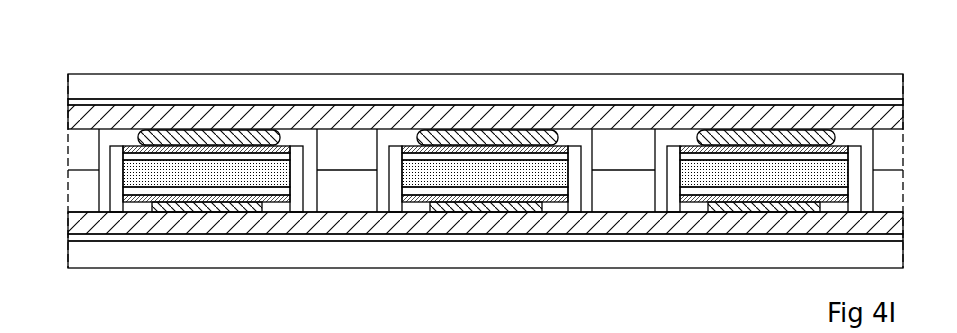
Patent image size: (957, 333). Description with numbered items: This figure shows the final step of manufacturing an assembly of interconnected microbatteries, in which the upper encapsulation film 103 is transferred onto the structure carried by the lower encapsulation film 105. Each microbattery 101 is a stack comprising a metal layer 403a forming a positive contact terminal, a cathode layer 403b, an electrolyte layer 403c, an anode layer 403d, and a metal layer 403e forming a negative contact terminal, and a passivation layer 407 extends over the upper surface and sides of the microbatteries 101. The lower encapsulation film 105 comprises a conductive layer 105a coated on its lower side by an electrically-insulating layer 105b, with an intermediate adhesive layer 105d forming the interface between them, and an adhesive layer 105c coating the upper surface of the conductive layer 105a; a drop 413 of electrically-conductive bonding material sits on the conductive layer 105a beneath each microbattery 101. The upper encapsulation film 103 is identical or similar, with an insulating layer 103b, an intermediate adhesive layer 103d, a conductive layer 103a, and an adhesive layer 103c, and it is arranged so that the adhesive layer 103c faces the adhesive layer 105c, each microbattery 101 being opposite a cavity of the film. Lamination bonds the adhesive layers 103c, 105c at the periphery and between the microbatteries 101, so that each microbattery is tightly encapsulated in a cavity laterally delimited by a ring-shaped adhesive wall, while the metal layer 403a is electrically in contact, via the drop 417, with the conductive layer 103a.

The microbattery 101 is at (118, 131).
The upper encapsulation film 103 is at (62, 75).
The conductive layer 103a is at (90, 122).
The insulating layer 103b is at (143, 90).
The adhesive layer 103c is at (355, 145).
The intermediate adhesive layer 103d is at (200, 104).
The lower encapsulation film 105 is at (62, 175).
The conductive layer 105a is at (92, 218).
The electrically-insulating layer 105b is at (187, 252).
The adhesive layer 105c is at (352, 202).
The intermediate adhesive layer 105d is at (252, 238).
The metal layer 403a is at (283, 150).
The cathode layer 403b is at (284, 156).
The electrolyte layer 403c is at (147, 172).
The anode layer 403d is at (148, 192).
The metal layer 403e is at (213, 202).
The passivation layer 407 is at (410, 207).
The drop of electrically-conductive bonding material 413 is at (256, 205).
The drop of electrically-conductive bonding material 417 is at (225, 137).